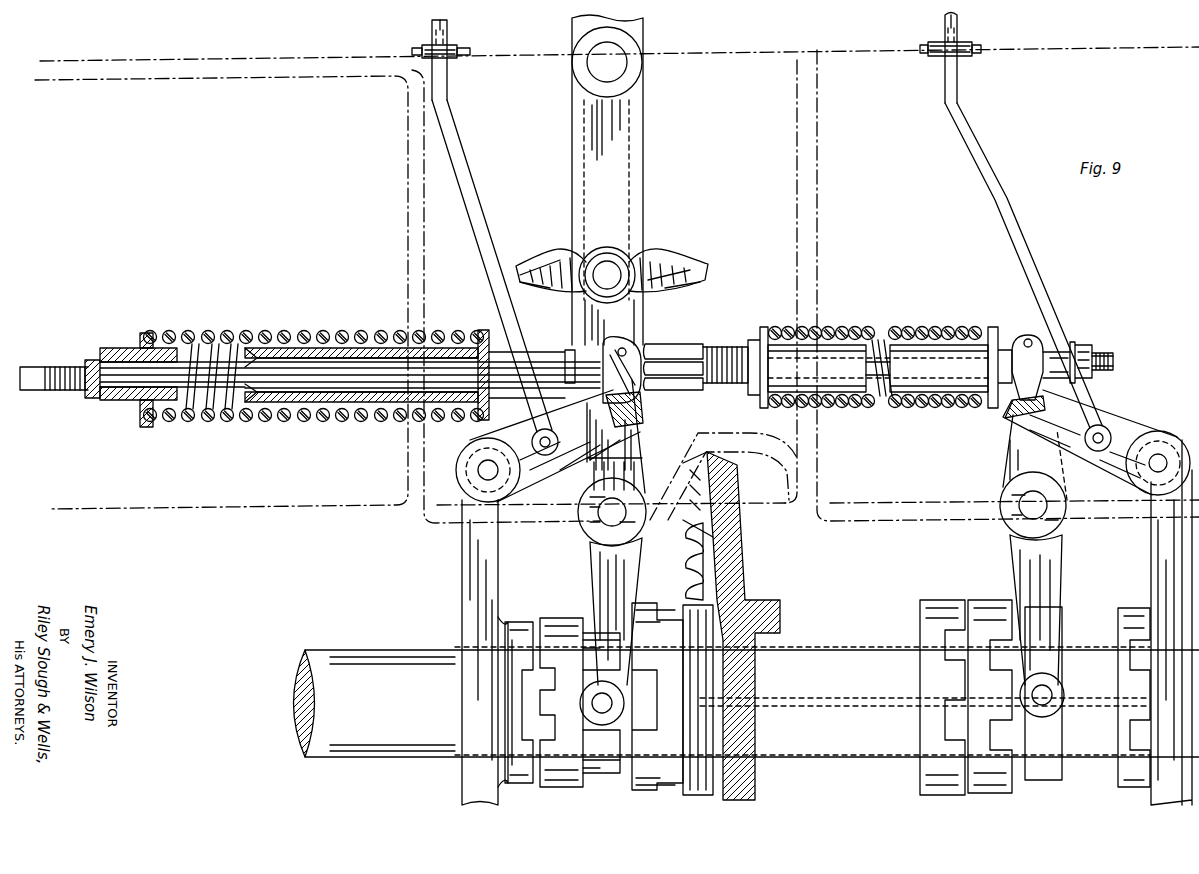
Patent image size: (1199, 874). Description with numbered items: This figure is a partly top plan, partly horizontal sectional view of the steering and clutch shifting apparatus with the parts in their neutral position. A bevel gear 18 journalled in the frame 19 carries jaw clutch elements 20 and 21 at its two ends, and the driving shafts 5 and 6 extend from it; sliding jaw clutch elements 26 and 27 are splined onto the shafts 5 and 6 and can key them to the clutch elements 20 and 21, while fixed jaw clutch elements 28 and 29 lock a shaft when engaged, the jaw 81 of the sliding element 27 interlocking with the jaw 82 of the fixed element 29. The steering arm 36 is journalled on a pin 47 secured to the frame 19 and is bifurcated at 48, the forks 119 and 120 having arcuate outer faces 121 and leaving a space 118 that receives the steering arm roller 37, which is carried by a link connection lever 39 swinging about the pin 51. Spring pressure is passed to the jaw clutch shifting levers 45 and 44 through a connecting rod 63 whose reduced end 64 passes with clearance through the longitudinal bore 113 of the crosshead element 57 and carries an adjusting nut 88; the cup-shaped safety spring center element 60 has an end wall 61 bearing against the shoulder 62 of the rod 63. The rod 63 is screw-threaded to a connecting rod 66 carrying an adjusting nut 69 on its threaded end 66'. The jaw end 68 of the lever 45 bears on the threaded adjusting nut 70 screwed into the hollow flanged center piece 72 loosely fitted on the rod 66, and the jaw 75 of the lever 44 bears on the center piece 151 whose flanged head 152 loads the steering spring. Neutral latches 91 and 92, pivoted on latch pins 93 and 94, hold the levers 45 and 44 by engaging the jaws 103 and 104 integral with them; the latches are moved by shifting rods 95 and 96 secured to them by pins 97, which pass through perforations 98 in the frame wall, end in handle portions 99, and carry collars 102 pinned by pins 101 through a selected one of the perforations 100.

The driving shaft 5 is at (1190, 660).
The driving shaft 6 is at (350, 662).
The bevel gear 18 is at (740, 545).
The frame 19 is at (817, 190).
The jaw clutch element 20 is at (945, 600).
The jaw clutch element 21 is at (672, 659).
The sliding jaw clutch element 26 is at (990, 600).
The sliding jaw clutch element 27 is at (558, 618).
The fixed jaw clutch element 28 is at (1134, 615).
The fixed jaw clutch element 29 is at (505, 618).
The steering arm 36 is at (645, 120).
The steering arm roller 37 is at (633, 282).
The link connection lever 39 is at (584, 318).
The jaw clutch shifting lever 44 is at (1048, 568).
The jaw clutch shifting lever 45 is at (630, 560).
The pin 47 is at (622, 70).
The bifurcated end 48 is at (650, 262).
The pin 51 is at (600, 522).
The crosshead element 57 is at (147, 333).
The safety spring center element 60 is at (290, 333).
The end wall 61 is at (248, 346).
The shoulder 62 is at (258, 362).
The connecting rod 63 is at (308, 376).
The reduced end 64 is at (205, 400).
The connecting rod 66 is at (879, 349).
The threaded end 66' is at (1117, 344).
The jaw end 68 is at (641, 345).
The adjusting nut 69 is at (70, 390).
The threaded adjusting nut 70 is at (703, 346).
The hollow flanged center piece 72 is at (818, 378).
The jaw 75 is at (1026, 336).
The jaw 81 is at (588, 700).
The jaw 82 is at (522, 714).
The adjusting nut 88 is at (95, 360).
The jaw clutch neutral latch 91 is at (548, 468).
The jaw clutch neutral latch 92 is at (1130, 428).
The latch pin 93 is at (478, 470).
The latch pin 94 is at (1160, 455).
The latch shifting rod 95 is at (470, 193).
The latch shifting rod 96 is at (1006, 205).
The pin 97 is at (532, 442).
The perforation 98 is at (448, 75).
The handle portion 99 is at (432, 22).
The perforation 100 is at (448, 40).
The pin 101 is at (457, 52).
The collar 102 is at (412, 51).
The jaw 103 is at (640, 400).
The jaw 104 is at (1025, 404).
The longitudinal bore 113 is at (135, 400).
The space 118 is at (606, 252).
The fork 119 is at (700, 270).
The fork 120 is at (526, 262).
The arcuate outer face 121 is at (550, 282).
The center piece 151 is at (938, 345).
The flanged head 152 is at (993, 327).